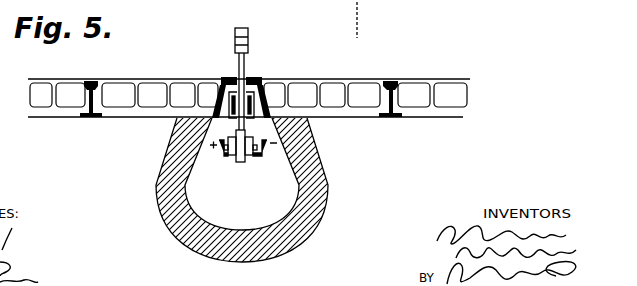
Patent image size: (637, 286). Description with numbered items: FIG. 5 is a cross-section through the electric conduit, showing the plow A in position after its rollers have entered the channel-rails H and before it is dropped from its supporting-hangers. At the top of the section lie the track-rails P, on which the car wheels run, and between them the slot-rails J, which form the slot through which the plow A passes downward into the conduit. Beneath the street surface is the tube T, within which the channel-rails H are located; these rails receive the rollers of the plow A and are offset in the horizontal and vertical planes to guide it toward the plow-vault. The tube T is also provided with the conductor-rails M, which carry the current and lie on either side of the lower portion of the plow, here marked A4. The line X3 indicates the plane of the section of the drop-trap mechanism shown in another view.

The plow A is at (250, 79).
The electromagnet A4 is at (239, 162).
The slot-rails J is at (229, 78).
The channel-rails H is at (231, 119).
The conductor-rails M is at (221, 157).
The track-rails P is at (91, 82).
The tube T is at (247, 190).
The section line X3 is at (368, 21).